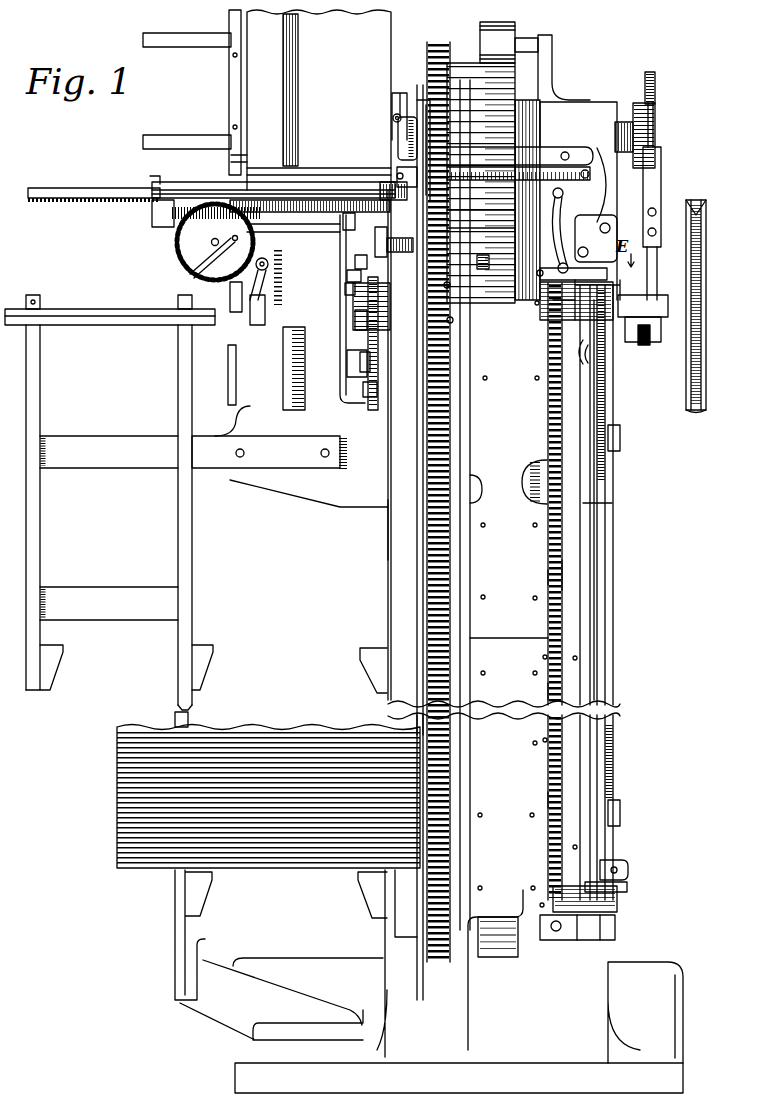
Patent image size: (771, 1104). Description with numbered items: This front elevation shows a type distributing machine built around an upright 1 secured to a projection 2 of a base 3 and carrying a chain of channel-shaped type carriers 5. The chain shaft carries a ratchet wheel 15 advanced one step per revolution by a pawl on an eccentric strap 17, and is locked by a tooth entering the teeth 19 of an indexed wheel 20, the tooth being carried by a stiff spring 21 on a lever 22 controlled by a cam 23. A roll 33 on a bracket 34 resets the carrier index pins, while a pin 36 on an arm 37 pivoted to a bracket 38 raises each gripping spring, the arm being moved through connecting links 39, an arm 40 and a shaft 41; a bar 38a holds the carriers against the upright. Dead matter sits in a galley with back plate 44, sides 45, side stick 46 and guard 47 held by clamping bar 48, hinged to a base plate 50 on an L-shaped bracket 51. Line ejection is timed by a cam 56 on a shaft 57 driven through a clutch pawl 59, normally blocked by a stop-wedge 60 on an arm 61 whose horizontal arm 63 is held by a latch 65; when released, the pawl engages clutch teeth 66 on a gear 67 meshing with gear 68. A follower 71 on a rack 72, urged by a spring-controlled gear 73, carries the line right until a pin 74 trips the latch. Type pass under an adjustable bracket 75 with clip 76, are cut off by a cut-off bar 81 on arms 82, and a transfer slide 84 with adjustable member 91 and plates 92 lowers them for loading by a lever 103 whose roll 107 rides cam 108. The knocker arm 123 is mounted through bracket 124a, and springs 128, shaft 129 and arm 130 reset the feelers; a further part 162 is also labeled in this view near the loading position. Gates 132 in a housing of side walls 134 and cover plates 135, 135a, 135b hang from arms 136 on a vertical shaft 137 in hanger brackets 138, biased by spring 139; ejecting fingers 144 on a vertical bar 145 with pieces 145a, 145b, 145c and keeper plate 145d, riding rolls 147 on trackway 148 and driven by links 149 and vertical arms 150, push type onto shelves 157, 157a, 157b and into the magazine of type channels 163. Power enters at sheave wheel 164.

The upright 1 is at (597, 110).
The projection 2 is at (615, 1009).
The base 3 is at (665, 990).
The type carriers 5 is at (467, 70).
The ratchet wheel 15 is at (645, 90).
The eccentric strap 17 is at (646, 325).
The teeth 19 is at (655, 103).
The indexed wheel 20 is at (652, 76).
The stiff spring 21 is at (661, 165).
The lever 22 is at (658, 342).
The cam 23 is at (657, 258).
The roll 33 is at (532, 33).
The bracket 34 is at (545, 62).
The pin 36 is at (447, 226).
The arm 37 is at (447, 206).
The bracket 38 is at (447, 158).
The bar 38a is at (462, 412).
The connecting links 39 is at (530, 197).
The arm 40 is at (558, 210).
The shaft 41 is at (563, 262).
The back plate 44 is at (319, 355).
The sides 45 is at (231, 22).
The side stick 46 is at (284, 98).
The guard 47 is at (233, 166).
The clamping bar 48 is at (300, 173).
The base plate 50 is at (160, 215).
The L-shaped bracket 51 is at (248, 407).
The cam 56 is at (290, 350).
The shaft 57 is at (234, 357).
The clutch pawl 59 is at (363, 368).
The stop-wedge 60 is at (347, 358).
The arm 61 is at (343, 340).
The horizontal arm 63 is at (253, 318).
The latch 65 is at (231, 306).
The clutch teeth 66 is at (363, 390).
The gear 67 is at (373, 408).
The gear 68 is at (378, 323).
The follower 71 is at (238, 200).
The rack 72 is at (85, 194).
The pinion or gear 73 is at (180, 243).
The pin 74 is at (195, 271).
The bracket 75 is at (393, 183).
The clip 76 is at (398, 93).
The cut-off bar 81 is at (417, 137).
The arms 82 is at (402, 116).
The transfer slide 84 is at (427, 125).
The adjustable member 91 is at (430, 127).
The plates 92 is at (422, 172).
The lever or arm 103 is at (347, 213).
The roll 107 is at (343, 288).
The cam 108 is at (358, 320).
The arm 123 is at (450, 285).
The bracket 124a is at (452, 320).
The springs 128 is at (375, 243).
The shaft 129 is at (347, 278).
The arm 130 is at (357, 258).
The gates 132 is at (527, 500).
The side walls 134 is at (482, 468).
The cover plate 135 is at (509, 580).
The cover plate 135a is at (529, 659).
The cover plate 135b is at (512, 777).
The arms 136 is at (575, 292).
The vertical shaft 137 is at (603, 654).
The hanger brackets 138 is at (600, 220).
The spring 139 is at (540, 277).
The ejecting finger 144 is at (612, 503).
The vertical bar 145 is at (555, 591).
The adjustable piece 145a is at (550, 576).
The adjustable piece 145b is at (547, 690).
The adjustable piece 145c is at (545, 800).
The keeper plate 145d is at (571, 573).
The rolls 147 is at (627, 876).
The trackway 148 is at (628, 890).
The links 149 is at (621, 436).
The vertical arms 150 is at (614, 399).
The shelf 157 is at (418, 580).
The shelf 157a is at (413, 681).
The shelf 157b is at (413, 727).
The spring 162 is at (482, 263).
The magazine of type channels 163 is at (315, 750).
The sheave wheel 164 is at (700, 370).